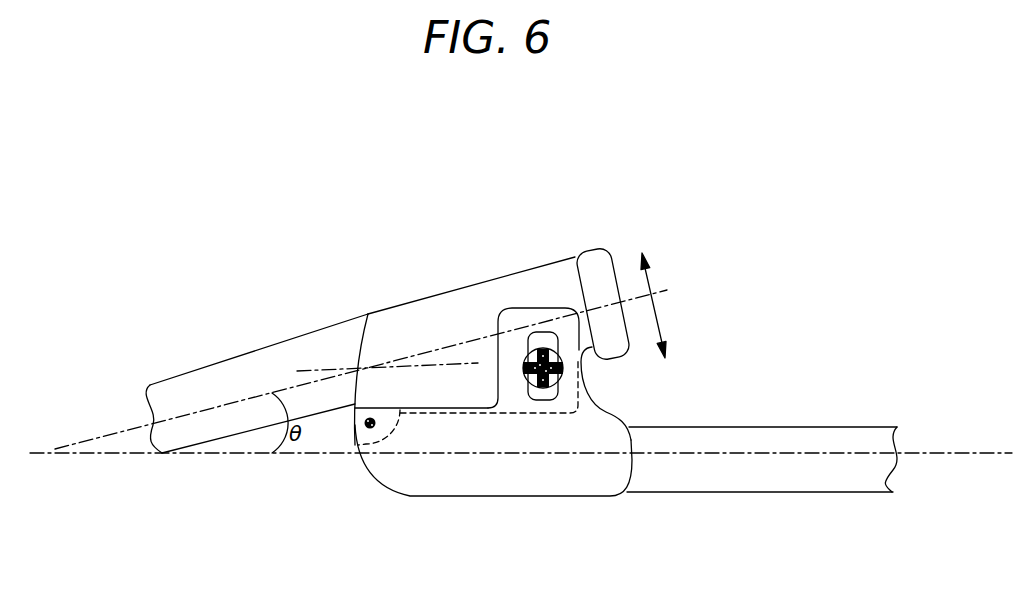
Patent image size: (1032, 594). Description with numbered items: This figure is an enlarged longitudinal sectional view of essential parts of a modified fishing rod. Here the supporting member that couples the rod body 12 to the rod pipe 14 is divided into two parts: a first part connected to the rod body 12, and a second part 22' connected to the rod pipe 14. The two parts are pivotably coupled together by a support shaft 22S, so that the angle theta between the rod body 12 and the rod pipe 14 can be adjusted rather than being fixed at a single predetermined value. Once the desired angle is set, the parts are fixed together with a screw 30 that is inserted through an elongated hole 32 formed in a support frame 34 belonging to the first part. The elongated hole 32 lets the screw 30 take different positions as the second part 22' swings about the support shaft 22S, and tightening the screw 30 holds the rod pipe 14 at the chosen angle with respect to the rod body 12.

The rod body 12 is at (748, 494).
The rod pipe 14 is at (245, 357).
The second part 22' is at (493, 315).
The support shaft 22S is at (364, 423).
The screw 30 is at (563, 367).
The elongated hole 32 is at (544, 343).
The support frame 34 is at (532, 311).